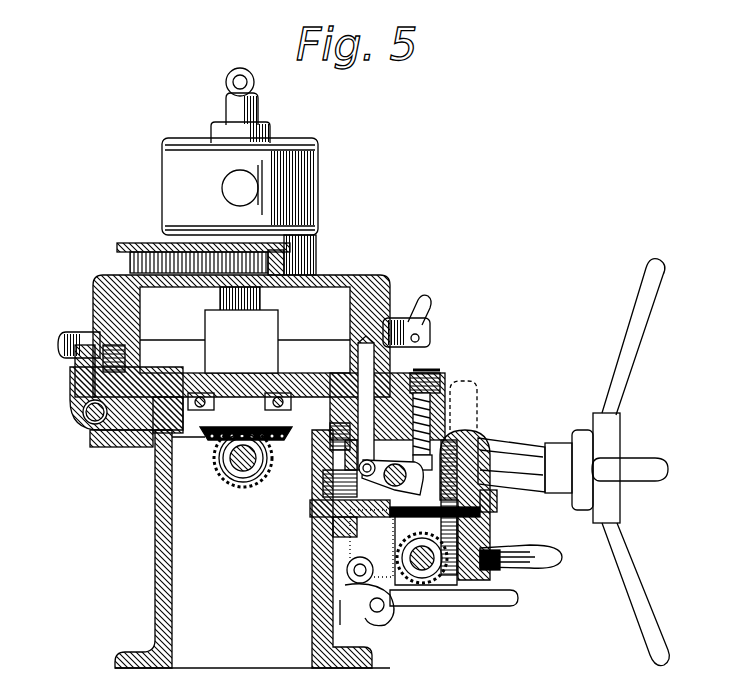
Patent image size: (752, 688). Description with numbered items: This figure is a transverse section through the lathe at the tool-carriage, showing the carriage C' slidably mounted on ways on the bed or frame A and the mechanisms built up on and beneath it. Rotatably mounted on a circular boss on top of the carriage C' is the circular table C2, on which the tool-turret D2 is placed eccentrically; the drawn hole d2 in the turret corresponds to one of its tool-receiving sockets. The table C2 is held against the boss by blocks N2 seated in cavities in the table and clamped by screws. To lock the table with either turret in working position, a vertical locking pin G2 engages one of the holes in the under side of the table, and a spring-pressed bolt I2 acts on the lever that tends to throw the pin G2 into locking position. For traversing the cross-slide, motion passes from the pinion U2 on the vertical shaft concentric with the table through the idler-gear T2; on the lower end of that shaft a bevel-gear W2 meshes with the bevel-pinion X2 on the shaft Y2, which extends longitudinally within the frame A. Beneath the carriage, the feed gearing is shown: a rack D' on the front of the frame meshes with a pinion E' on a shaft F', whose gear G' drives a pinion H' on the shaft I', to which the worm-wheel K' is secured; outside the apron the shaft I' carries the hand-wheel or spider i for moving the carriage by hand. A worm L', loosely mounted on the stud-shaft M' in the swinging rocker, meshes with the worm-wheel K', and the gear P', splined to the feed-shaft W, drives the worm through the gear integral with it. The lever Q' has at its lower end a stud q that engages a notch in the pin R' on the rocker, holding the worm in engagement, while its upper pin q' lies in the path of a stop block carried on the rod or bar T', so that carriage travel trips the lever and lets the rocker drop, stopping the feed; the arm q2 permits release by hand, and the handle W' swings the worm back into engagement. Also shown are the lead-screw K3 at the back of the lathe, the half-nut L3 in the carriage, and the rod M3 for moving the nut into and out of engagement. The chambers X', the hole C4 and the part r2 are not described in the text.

The tool-turret D2 is at (305, 198).
The hole in knob d2 is at (232, 198).
The pinion U2 is at (283, 260).
The idler-gear T2 is at (118, 250).
The circular table C2 is at (372, 277).
The rod M3 is at (247, 380).
The chamber X' is at (245, 368).
The block N2 is at (108, 363).
The thumb screw C4 is at (403, 358).
The screw K3 is at (85, 418).
The half or sectional nut L3 is at (97, 447).
The tool-carriage C' is at (141, 439).
The bevel-gear W2 is at (212, 440).
The bed or frame A is at (157, 519).
The bevel-pinion X2 is at (228, 479).
The shaft Y2 is at (247, 472).
The rod r2 is at (375, 403).
The locking bolt or pin G2 is at (413, 374).
The spring-pressed bolt I2 is at (445, 425).
The gear G' is at (473, 494).
The rack D' is at (315, 455).
The pinion E' is at (322, 490).
The shaft F' is at (383, 518).
The rod or bar T' is at (336, 546).
The pin or stud q' is at (317, 559).
The stud-shaft M' is at (306, 574).
The gear P' is at (426, 573).
The feed-shaft W is at (428, 591).
The worm L' is at (400, 595).
The arm or handle q2 is at (512, 597).
The lever Q' is at (339, 608).
The pin R' is at (372, 622).
The lug or stud q is at (348, 620).
The pinion H' is at (511, 465).
The shaft I' is at (497, 502).
The worm-wheel K' is at (491, 543).
The handle W' is at (528, 577).
The hand-wheel or spider i is at (613, 456).